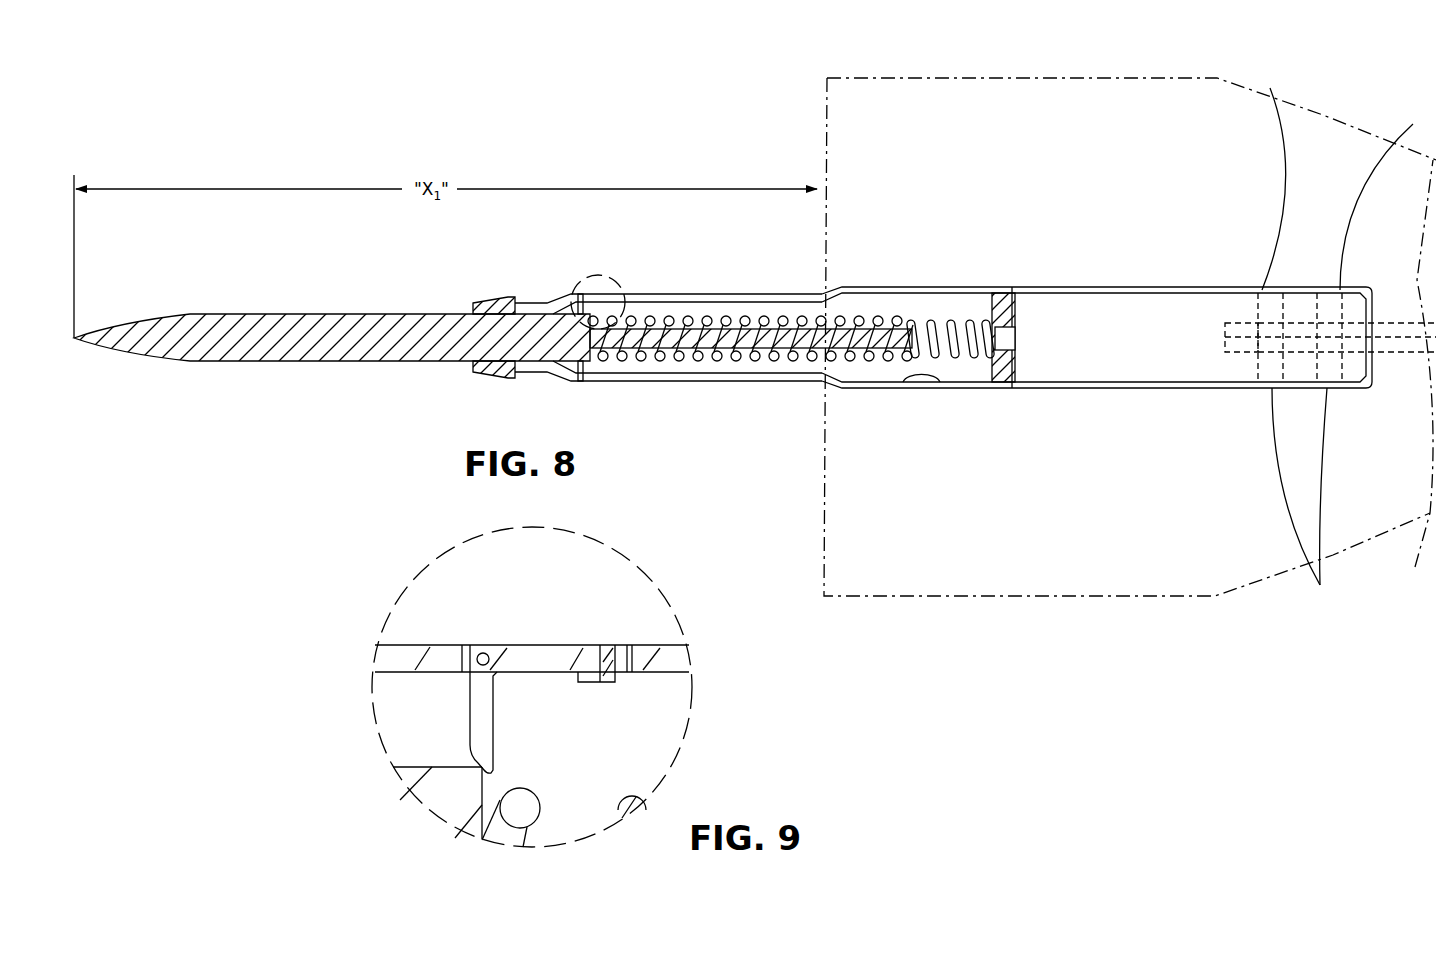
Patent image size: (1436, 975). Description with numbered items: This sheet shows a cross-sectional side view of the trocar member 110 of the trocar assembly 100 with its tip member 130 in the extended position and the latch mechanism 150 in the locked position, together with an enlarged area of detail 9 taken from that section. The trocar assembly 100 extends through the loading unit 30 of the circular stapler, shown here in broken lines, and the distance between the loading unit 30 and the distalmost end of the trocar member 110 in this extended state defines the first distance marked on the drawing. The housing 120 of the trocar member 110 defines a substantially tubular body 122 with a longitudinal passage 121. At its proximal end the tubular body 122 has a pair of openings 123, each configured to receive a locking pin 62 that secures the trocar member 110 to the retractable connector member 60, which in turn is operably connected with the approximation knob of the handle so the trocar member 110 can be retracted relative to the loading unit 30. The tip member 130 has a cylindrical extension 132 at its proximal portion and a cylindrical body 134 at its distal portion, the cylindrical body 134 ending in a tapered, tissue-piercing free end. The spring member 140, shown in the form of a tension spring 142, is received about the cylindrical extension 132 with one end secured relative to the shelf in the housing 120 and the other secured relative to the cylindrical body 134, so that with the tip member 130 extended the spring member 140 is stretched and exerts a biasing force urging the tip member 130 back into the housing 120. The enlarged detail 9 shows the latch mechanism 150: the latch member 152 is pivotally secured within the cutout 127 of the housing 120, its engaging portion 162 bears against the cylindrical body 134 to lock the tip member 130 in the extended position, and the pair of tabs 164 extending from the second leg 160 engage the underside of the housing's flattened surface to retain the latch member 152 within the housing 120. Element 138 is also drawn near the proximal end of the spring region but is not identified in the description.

In FIG. 8, the trocar assembly 100 is at (877, 53).
In FIG. 8, the loading unit 30 is at (1098, 68).
In FIG. 8, the trocar member 110 is at (778, 150).
In FIG. 8, the housing 120 is at (896, 272).
In FIG. 9, the housing 120 is at (422, 640).
In FIG. 8, the longitudinal passage 121 is at (920, 392).
In FIG. 8, the tubular body 122 is at (1104, 389).
In FIG. 8, the openings 123 is at (1342, 174).
In FIG. 8, the connector member 60 is at (1300, 318).
In FIG. 8, the locking pin 62 is at (1304, 501).
In FIG. 8, the tip member 130 is at (431, 311).
In FIG. 8, the cylindrical extension 132 is at (718, 316).
In FIG. 8, the cylindrical body 134 is at (290, 363).
In FIG. 9, the cylindrical body 134 is at (437, 787).
In FIG. 8, the plunger 138 is at (1003, 282).
In FIG. 8, the spring member 140 is at (785, 360).
In FIG. 9, the spring member 140 is at (615, 780).
In FIG. 8, the tension spring 142 is at (690, 350).
In FIG. 9, the tension spring 142 is at (517, 812).
In FIG. 8, the cutout 127 is at (580, 337).
In FIG. 9, the cutout 127 is at (466, 650).
In FIG. 9, the latch mechanism 150 is at (565, 602).
In FIG. 9, the latch member 152 is at (527, 640).
In FIG. 9, the second leg 160 is at (567, 658).
In FIG. 9, the engaging portion 162 is at (478, 772).
In FIG. 9, the tabs 164 is at (605, 668).
In FIG. 8, the detail view circle 9 is at (618, 278).